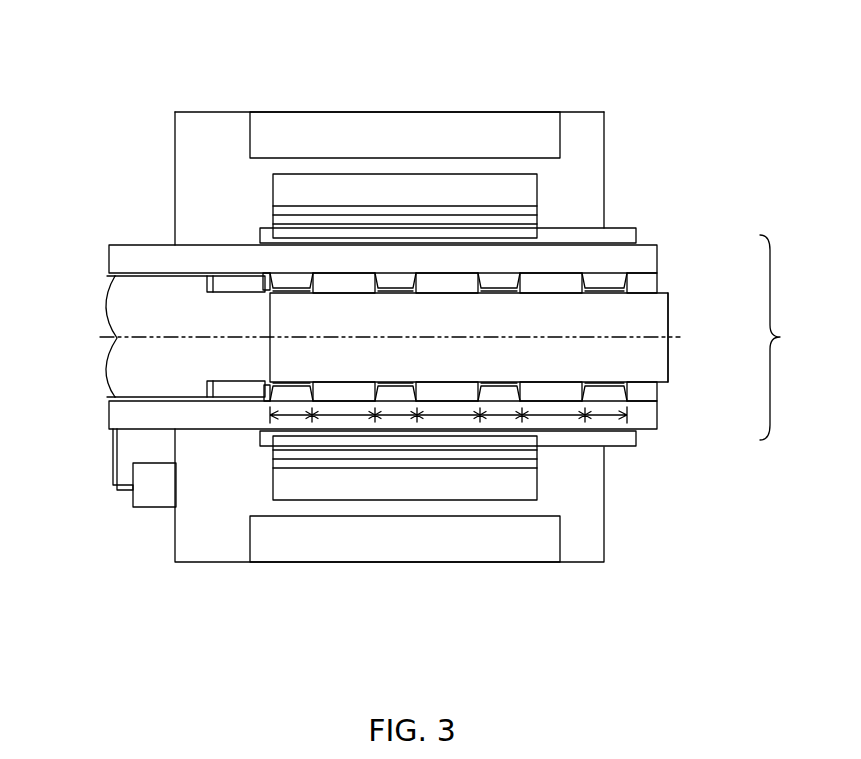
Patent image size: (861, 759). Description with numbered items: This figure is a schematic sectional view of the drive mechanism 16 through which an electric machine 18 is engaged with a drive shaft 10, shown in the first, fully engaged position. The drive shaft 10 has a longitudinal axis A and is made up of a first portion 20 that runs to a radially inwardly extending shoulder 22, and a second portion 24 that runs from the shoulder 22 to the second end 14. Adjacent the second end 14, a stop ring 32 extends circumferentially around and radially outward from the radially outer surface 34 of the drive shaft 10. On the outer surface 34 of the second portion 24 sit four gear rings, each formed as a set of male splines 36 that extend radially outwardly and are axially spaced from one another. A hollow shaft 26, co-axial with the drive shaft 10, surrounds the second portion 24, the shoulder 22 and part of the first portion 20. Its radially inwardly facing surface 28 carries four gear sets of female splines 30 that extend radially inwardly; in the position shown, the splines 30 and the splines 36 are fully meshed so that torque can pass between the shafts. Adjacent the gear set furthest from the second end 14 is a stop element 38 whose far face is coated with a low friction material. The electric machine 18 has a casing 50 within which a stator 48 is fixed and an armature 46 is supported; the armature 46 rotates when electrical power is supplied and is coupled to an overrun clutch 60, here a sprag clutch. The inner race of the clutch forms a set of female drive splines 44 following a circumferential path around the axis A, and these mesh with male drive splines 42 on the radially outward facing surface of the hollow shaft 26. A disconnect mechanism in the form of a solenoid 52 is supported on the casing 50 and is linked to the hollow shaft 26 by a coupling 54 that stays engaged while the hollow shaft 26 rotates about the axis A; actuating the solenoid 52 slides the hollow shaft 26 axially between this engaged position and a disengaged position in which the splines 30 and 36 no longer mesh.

The drive shaft 10 is at (103, 284).
The second end 14 is at (670, 353).
The drive mechanism 16 is at (787, 337).
The electric machine 18 is at (263, 112).
The first portion 20 is at (140, 365).
The shoulder 22 is at (212, 287).
The second portion 24 is at (551, 322).
The hollow shaft 26 is at (658, 258).
The radially inwardly facing surface 28 is at (247, 273).
The splines 30 is at (286, 280).
The stop ring 32 is at (645, 390).
The radially outer surface 34 is at (583, 278).
The splines 36 is at (313, 278).
The stop element 38 is at (266, 395).
The male drive splines 42 is at (621, 236).
The female drive splines 44 is at (348, 222).
The armature 46 is at (460, 197).
The stator 48 is at (262, 133).
The casing 50 is at (175, 183).
The solenoid 52 is at (157, 490).
The coupling 54 is at (113, 472).
The overrun clutch 60 is at (411, 210).
The longitudinal axis A is at (108, 340).